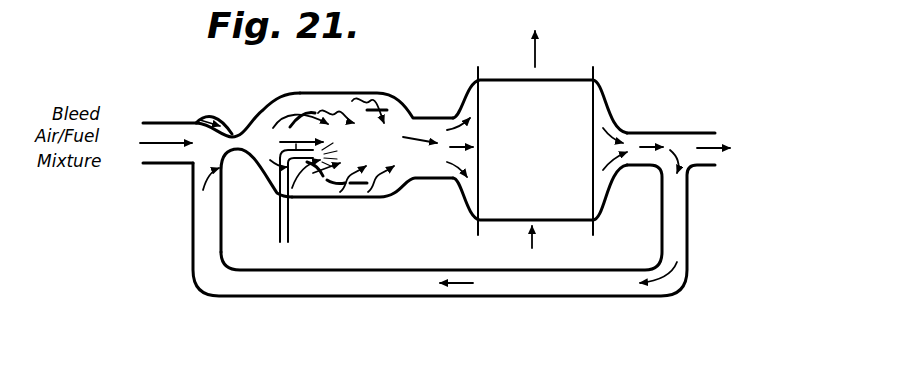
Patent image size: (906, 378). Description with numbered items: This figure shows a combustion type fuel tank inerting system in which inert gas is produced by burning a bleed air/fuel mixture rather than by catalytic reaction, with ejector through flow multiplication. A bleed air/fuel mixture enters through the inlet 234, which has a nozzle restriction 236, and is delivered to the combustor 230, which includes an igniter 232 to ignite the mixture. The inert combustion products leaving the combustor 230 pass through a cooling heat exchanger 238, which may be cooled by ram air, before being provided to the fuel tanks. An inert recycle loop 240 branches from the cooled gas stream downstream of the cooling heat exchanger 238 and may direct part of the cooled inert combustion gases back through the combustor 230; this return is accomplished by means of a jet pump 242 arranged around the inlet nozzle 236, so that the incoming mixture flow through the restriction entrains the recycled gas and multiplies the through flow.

The combustor 230 is at (378, 93).
The igniter 232 is at (290, 228).
The inlet 234 is at (157, 122).
The nozzle restriction 236 is at (238, 128).
The cooling heat exchanger 238 is at (573, 80).
The inert recycle loop 240 is at (403, 297).
The jet pump 242 is at (210, 116).